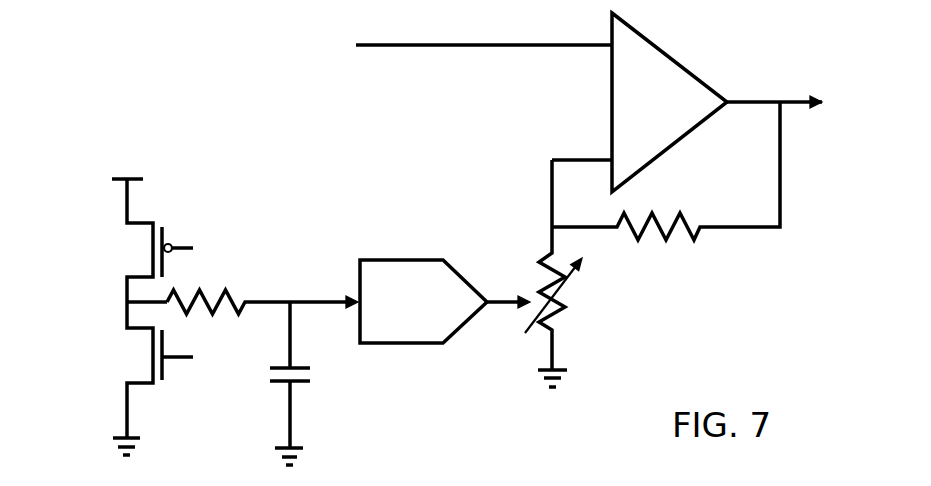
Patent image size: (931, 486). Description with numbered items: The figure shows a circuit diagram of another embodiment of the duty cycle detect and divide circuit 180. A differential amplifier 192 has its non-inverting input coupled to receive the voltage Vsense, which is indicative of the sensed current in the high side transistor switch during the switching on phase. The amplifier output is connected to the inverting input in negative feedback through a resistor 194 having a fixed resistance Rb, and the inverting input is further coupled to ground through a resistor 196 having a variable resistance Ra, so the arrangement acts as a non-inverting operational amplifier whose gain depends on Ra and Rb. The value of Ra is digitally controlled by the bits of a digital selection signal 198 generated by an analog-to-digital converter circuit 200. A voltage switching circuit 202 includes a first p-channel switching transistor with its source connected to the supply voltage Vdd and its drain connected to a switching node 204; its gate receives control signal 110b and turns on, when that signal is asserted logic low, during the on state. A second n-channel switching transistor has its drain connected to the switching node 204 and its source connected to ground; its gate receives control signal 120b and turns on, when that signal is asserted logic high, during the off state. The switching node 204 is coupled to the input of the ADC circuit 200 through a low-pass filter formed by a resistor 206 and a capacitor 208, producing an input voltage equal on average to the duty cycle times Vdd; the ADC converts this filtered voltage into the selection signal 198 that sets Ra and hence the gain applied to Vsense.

The duty cycle detect and divide circuit 180 is at (297, 88).
The differential amplifier 192 is at (697, 125).
The resistor 194 is at (692, 233).
The resistor 196 is at (562, 315).
The digital selection signal 198 is at (490, 293).
The analog-to-digital converter circuit 200 is at (395, 260).
The voltage switching circuit 202 is at (103, 332).
The switching node 204 is at (125, 305).
The resistor 206 is at (245, 300).
The capacitor 208 is at (310, 372).
The control signal 110b is at (206, 251).
The control signal 120b is at (205, 361).